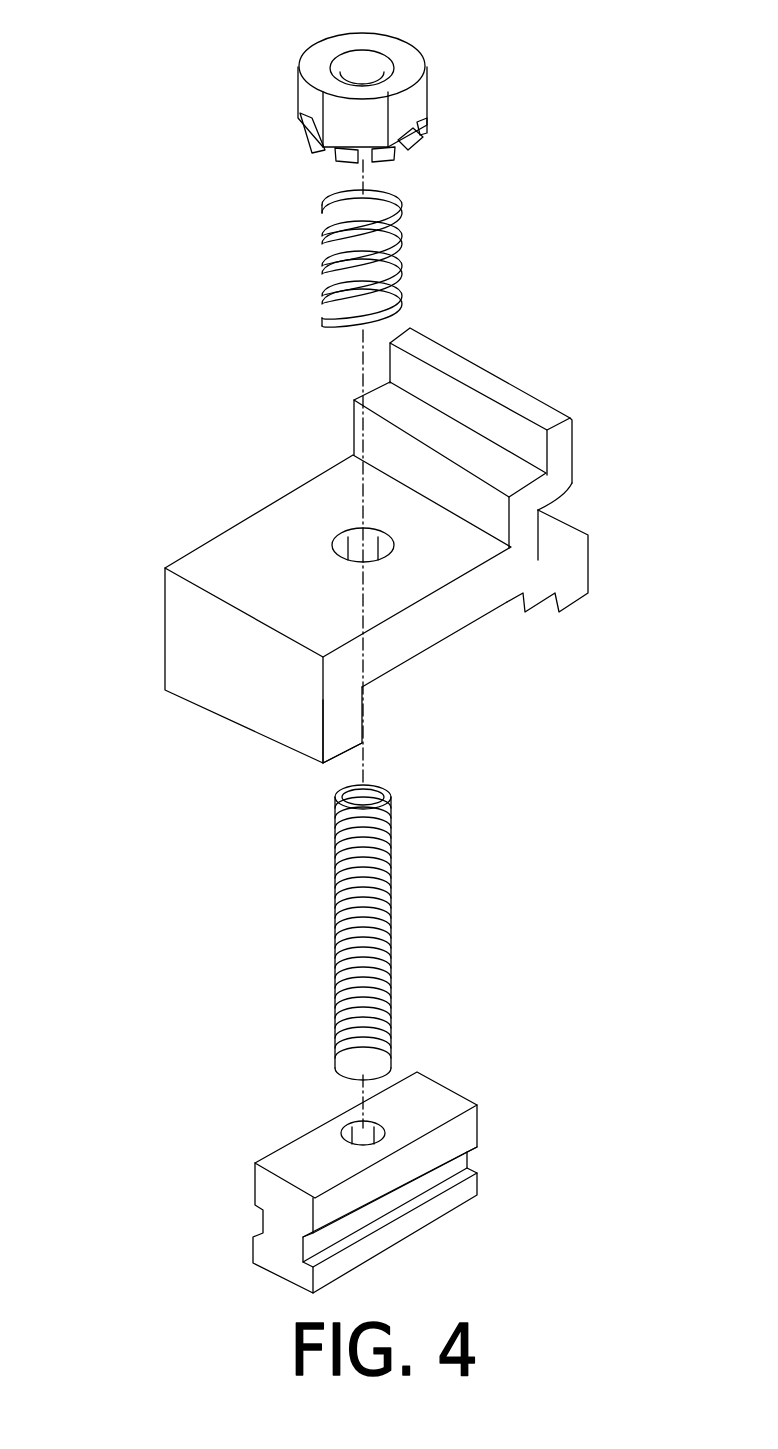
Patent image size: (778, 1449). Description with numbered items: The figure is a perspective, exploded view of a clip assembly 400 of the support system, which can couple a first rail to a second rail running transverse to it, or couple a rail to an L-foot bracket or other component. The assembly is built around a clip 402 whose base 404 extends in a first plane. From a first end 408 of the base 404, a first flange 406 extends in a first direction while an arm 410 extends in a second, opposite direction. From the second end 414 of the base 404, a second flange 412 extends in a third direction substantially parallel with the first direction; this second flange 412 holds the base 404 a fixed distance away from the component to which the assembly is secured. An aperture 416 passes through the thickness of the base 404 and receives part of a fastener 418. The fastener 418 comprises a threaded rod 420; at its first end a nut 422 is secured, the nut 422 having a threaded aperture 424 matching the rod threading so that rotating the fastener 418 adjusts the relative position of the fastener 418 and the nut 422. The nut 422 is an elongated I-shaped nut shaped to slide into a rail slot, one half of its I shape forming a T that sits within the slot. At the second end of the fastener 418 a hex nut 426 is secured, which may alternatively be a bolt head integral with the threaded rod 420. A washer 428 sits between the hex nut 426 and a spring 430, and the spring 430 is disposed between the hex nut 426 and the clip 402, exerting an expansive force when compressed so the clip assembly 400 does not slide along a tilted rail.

The clip assembly 400 is at (587, 48).
The clip 402 is at (158, 517).
The base 404 is at (444, 632).
The first flange 406 is at (586, 590).
The first end 408 is at (540, 418).
The arm 410 is at (560, 437).
The second flange 412 is at (338, 705).
The second end 414 is at (150, 612).
The aperture 416 is at (338, 533).
The fastener 418 is at (381, 932).
The threaded rod 420 is at (335, 942).
The nut 422 is at (313, 1182).
The aperture 424 is at (348, 1130).
The hex nut 426 is at (430, 103).
The washer 428 is at (302, 147).
The spring 430 is at (320, 232).